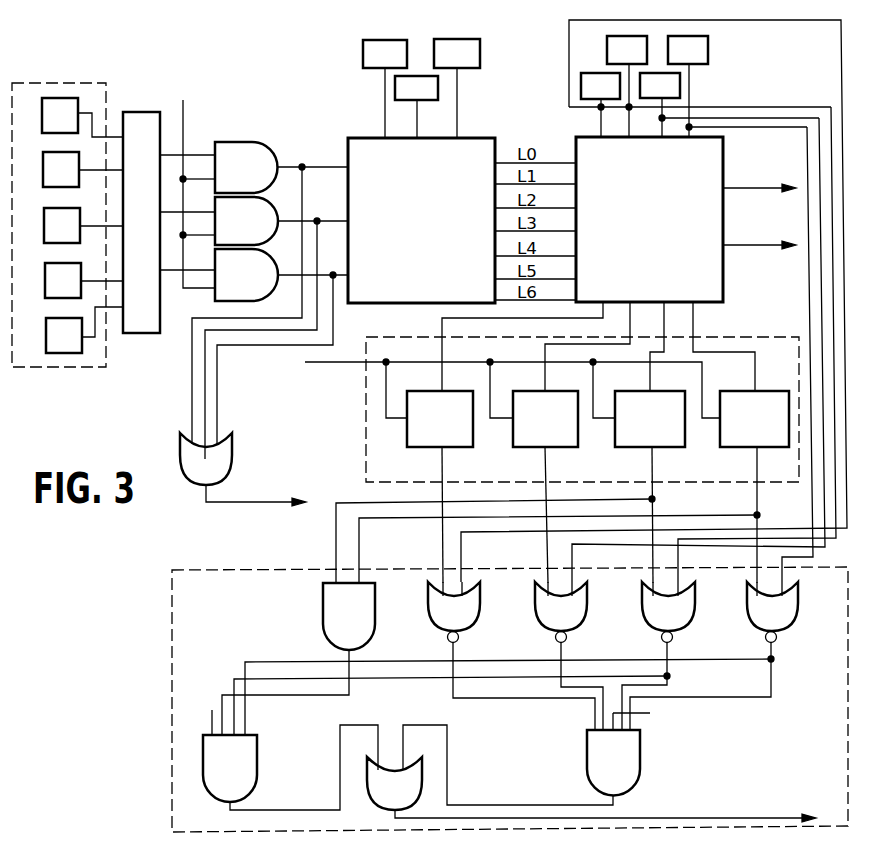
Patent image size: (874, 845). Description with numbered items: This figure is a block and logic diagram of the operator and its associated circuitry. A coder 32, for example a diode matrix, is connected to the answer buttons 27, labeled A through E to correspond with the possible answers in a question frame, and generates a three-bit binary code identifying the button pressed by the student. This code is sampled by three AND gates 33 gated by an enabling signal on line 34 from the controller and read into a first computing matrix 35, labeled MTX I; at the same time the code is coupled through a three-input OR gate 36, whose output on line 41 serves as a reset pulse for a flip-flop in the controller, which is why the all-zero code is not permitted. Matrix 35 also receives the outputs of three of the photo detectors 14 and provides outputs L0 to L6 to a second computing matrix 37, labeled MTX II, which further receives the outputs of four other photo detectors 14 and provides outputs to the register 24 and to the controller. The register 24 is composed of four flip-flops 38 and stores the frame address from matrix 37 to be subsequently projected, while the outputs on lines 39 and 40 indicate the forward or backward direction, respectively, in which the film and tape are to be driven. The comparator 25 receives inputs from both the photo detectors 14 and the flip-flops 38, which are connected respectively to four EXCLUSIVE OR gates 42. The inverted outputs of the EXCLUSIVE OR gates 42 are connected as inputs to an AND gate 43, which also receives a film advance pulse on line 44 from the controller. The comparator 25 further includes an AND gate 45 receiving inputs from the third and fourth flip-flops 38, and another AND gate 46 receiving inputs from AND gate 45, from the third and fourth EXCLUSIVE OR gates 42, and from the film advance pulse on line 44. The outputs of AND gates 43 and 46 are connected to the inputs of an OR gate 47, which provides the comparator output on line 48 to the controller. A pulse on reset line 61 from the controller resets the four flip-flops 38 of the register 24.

The photo detectors 14 is at (723, 46).
The register 24 is at (366, 442).
The comparator 25 is at (172, 702).
The answer buttons 27 is at (48, 83).
The coder 32 is at (132, 112).
The AND gates 33 is at (276, 146).
The enabling signal line 34 is at (185, 130).
The first computing matrix 35 is at (400, 305).
The three input OR gate 36 is at (234, 450).
The second computing matrix 37 is at (710, 305).
The flip-flops 38 is at (719, 449).
The forward direction output line 39 is at (760, 188).
The backward direction output line 40 is at (760, 245).
The reset pulse line 41 is at (228, 503).
The EXCLUSIVE OR gates 42 is at (749, 621).
The AND gate 43 is at (641, 761).
The film advance pulse line 44 is at (211, 718).
The AND gate 45 is at (323, 602).
The AND gate 46 is at (256, 753).
The OR gate 47 is at (374, 801).
The comparator output line 48 is at (758, 818).
The reset line 61 is at (322, 362).